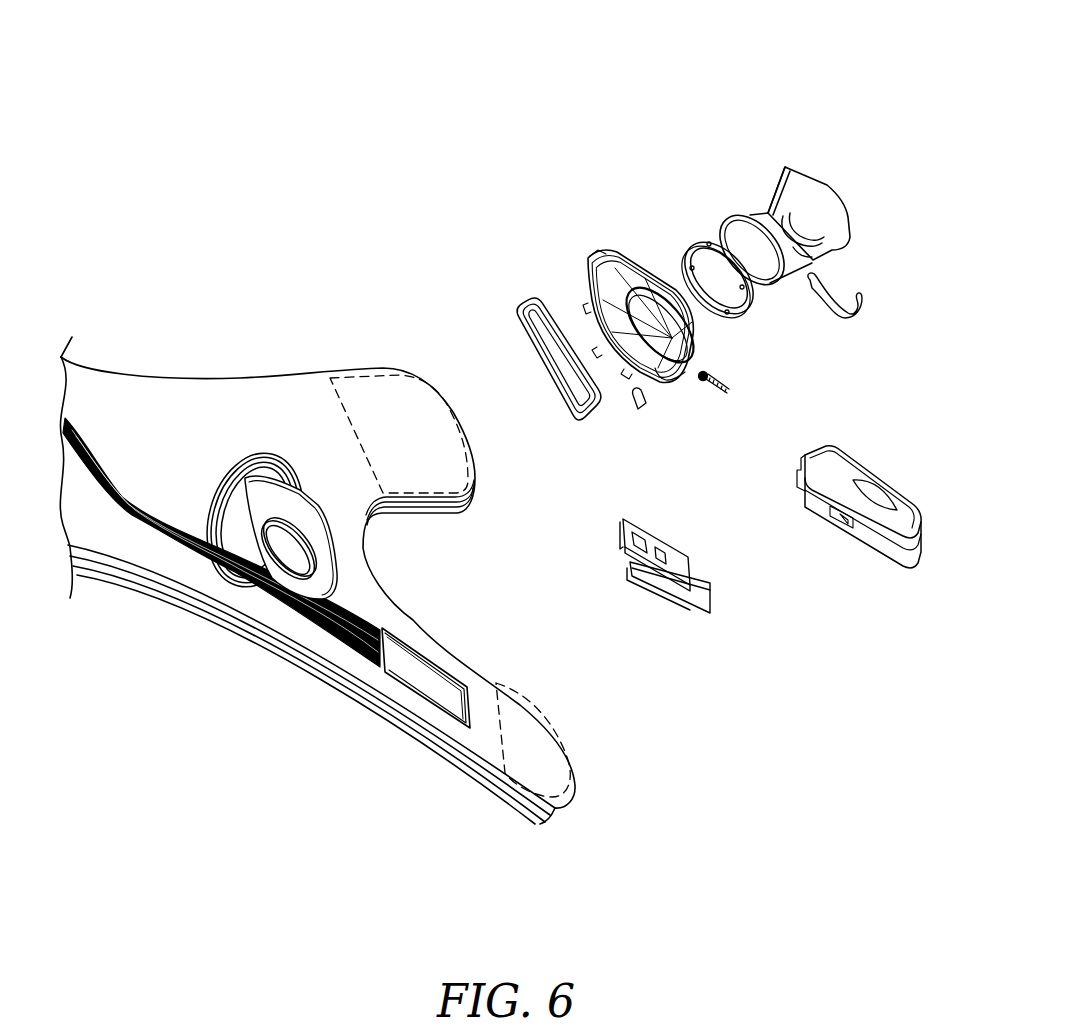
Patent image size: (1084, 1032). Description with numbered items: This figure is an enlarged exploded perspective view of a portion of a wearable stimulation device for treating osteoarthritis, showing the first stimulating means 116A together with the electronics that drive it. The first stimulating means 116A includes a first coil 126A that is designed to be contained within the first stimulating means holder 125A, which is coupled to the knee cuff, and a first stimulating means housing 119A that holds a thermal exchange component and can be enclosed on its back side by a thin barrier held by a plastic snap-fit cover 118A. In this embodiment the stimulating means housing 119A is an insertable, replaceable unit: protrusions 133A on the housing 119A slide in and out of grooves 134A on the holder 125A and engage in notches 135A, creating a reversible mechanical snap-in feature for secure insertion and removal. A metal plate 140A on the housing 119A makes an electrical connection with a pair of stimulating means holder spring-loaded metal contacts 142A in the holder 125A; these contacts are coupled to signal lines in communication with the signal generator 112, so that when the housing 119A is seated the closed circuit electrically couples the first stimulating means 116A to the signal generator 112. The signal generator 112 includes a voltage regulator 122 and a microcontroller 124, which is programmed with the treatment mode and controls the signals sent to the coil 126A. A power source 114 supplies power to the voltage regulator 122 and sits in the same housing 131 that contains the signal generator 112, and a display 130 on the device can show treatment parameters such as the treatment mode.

The first stimulating means 116A is at (783, 86).
The first stimulating means housing 119A is at (812, 175).
The protrusions 133A is at (770, 197).
The plastic snap-fit cover 118A is at (739, 309).
The first stimulating means holder 125A is at (617, 251).
The grooves 134A is at (672, 320).
The first coil 126A is at (523, 305).
The notches 135A is at (697, 352).
The metal plate 140A is at (846, 316).
The stimulating means holder spring-loaded metal contacts 142A is at (728, 397).
The display 130 is at (878, 482).
The housing 131 is at (871, 550).
The signal generator 112 is at (678, 561).
The power source 114 is at (706, 592).
The voltage regulator 122 is at (657, 545).
The microcontroller 124 is at (643, 568).